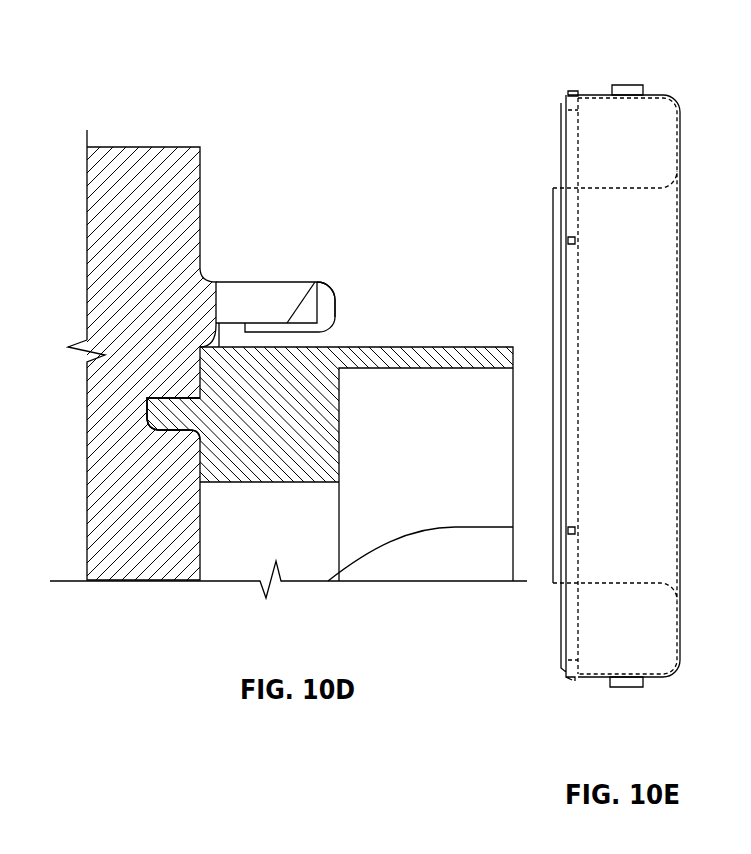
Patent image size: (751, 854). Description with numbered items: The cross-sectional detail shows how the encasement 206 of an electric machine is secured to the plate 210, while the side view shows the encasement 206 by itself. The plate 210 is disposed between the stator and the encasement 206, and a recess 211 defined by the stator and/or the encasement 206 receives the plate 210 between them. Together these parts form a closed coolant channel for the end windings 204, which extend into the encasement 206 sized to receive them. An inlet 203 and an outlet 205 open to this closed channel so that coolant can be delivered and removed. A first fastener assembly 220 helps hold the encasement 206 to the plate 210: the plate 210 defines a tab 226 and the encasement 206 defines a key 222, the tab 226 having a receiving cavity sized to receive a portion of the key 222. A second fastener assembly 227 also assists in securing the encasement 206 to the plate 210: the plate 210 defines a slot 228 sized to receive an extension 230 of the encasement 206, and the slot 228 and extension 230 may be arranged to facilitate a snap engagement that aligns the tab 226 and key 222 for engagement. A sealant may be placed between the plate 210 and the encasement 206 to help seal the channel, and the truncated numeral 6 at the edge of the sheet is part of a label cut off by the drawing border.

In FIG. 10D, the partial reference (cut off) 6 is at (4, 72).
In FIG. 10E, the inlet 203 is at (645, 90).
In FIG. 10D, the end windings 204 is at (35, 148).
In FIG. 10E, the outlet 205 is at (645, 682).
In FIG. 10D, the encasement 206 is at (458, 348).
In FIG. 10E, the encasement 206 is at (663, 143).
In FIG. 10D, the plate 210 is at (167, 148).
In FIG. 10E, the recess 211 is at (566, 142).
In FIG. 10D, the first fastener assembly 220 is at (247, 266).
In FIG. 10D, the key 222 is at (312, 296).
In FIG. 10D, the tab 226 is at (290, 282).
In FIG. 10D, the second fastener assembly 227 is at (145, 407).
In FIG. 10D, the slot 228 is at (147, 412).
In FIG. 10D, the extension 230 is at (175, 423).